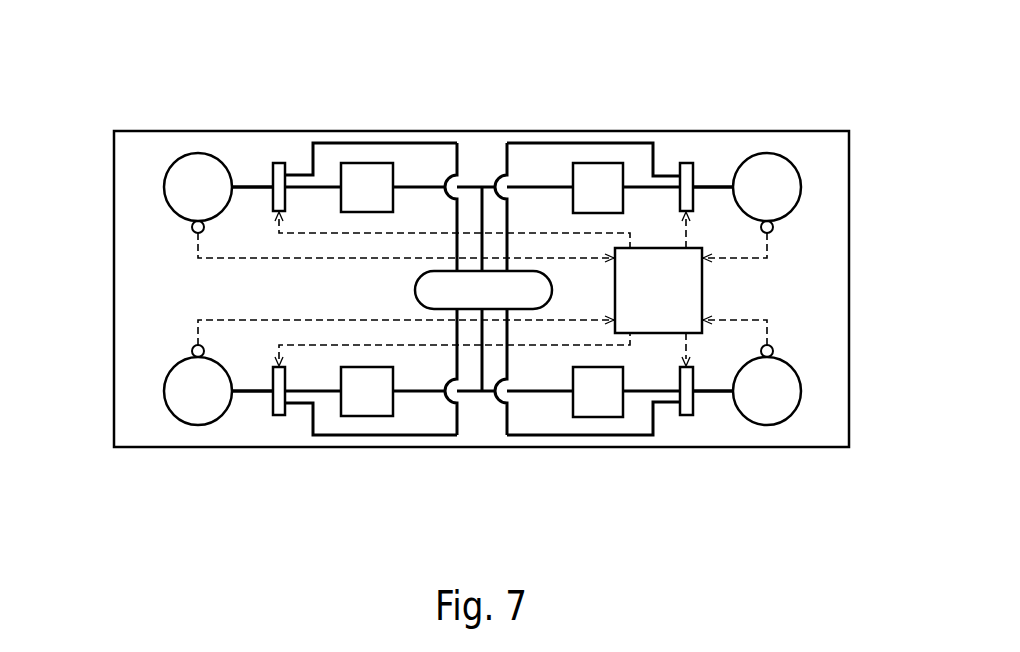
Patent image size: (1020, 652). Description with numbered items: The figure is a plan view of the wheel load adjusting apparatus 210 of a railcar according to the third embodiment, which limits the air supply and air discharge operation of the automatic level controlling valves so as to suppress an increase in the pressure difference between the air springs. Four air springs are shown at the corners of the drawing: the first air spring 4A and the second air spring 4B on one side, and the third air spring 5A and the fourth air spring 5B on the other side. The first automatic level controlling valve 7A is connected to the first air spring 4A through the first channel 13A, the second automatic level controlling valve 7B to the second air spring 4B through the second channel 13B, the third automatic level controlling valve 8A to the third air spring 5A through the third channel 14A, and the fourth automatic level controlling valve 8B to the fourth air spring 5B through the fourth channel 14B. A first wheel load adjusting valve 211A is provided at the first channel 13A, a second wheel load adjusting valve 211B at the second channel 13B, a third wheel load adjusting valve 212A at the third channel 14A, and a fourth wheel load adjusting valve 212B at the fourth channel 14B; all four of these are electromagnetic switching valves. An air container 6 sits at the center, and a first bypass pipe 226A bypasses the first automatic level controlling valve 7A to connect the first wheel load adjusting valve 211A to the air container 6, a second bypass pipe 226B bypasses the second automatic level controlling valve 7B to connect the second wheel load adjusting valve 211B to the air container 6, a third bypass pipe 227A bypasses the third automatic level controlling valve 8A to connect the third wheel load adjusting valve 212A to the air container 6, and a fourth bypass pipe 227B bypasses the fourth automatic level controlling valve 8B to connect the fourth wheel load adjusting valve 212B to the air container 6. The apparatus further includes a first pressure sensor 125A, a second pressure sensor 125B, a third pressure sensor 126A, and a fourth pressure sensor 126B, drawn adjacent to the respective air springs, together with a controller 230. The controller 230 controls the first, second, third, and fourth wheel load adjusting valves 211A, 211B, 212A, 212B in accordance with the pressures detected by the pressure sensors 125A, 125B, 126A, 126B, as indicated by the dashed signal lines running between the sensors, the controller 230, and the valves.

The wheel load adjusting apparatus 210 is at (822, 198).
The third air spring 5A is at (167, 168).
The first air spring 4A is at (797, 174).
The fourth air spring 5B is at (167, 410).
The second air spring 4B is at (797, 404).
The third pressure sensor 126A is at (192, 228).
The first pressure sensor 125A is at (773, 228).
The fourth pressure sensor 126B is at (192, 351).
The second pressure sensor 125B is at (773, 351).
The third channel 14A is at (245, 183).
The fourth channel 14B is at (245, 395).
The first channel 13A is at (715, 185).
The second channel 13B is at (715, 393).
The third wheel load adjusting valve 212A is at (278, 160).
The fourth wheel load adjusting valve 212B is at (278, 418).
The first wheel load adjusting valve 211A is at (688, 161).
The second wheel load adjusting valve 211B is at (688, 417).
The third automatic level controlling valve 8A is at (364, 161).
The fourth automatic level controlling valve 8B is at (364, 417).
The first automatic level controlling valve 7A is at (603, 161).
The second automatic level controlling valve 7B is at (603, 417).
The third bypass pipe 227A is at (422, 141).
The fourth bypass pipe 227B is at (422, 437).
The first bypass pipe 226A is at (545, 141).
The second bypass pipe 226B is at (545, 437).
The air container 6 is at (415, 290).
The controller 230 is at (702, 290).